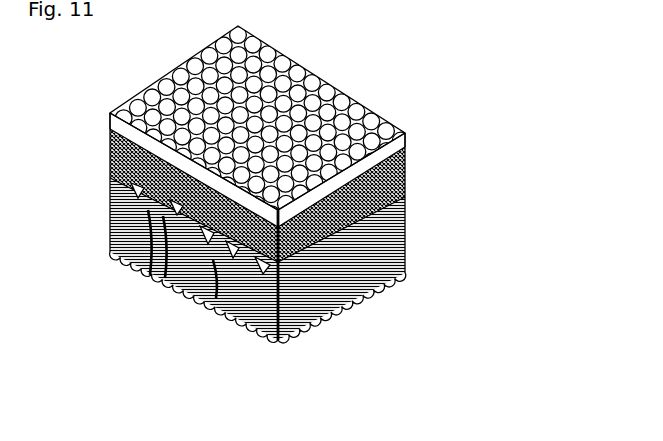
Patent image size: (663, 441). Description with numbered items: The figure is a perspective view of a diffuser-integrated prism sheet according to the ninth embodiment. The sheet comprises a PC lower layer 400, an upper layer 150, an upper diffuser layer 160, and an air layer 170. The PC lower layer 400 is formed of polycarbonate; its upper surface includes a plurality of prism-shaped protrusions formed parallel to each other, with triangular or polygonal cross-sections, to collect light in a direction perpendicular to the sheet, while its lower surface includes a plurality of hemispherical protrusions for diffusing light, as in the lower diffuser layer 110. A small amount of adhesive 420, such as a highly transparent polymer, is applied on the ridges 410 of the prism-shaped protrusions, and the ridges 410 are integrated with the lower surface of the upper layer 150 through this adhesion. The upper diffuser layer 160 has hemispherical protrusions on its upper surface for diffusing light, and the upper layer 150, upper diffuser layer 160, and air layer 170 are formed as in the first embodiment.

The lower diffuser layer 110 is at (412, 243).
The upper layer 150 is at (112, 161).
The upper diffuser layer 160 is at (118, 128).
The air layer 170 is at (288, 338).
The PC lower layer 400 is at (113, 217).
The ridges 410 is at (212, 240).
The adhesive 420 is at (163, 263).